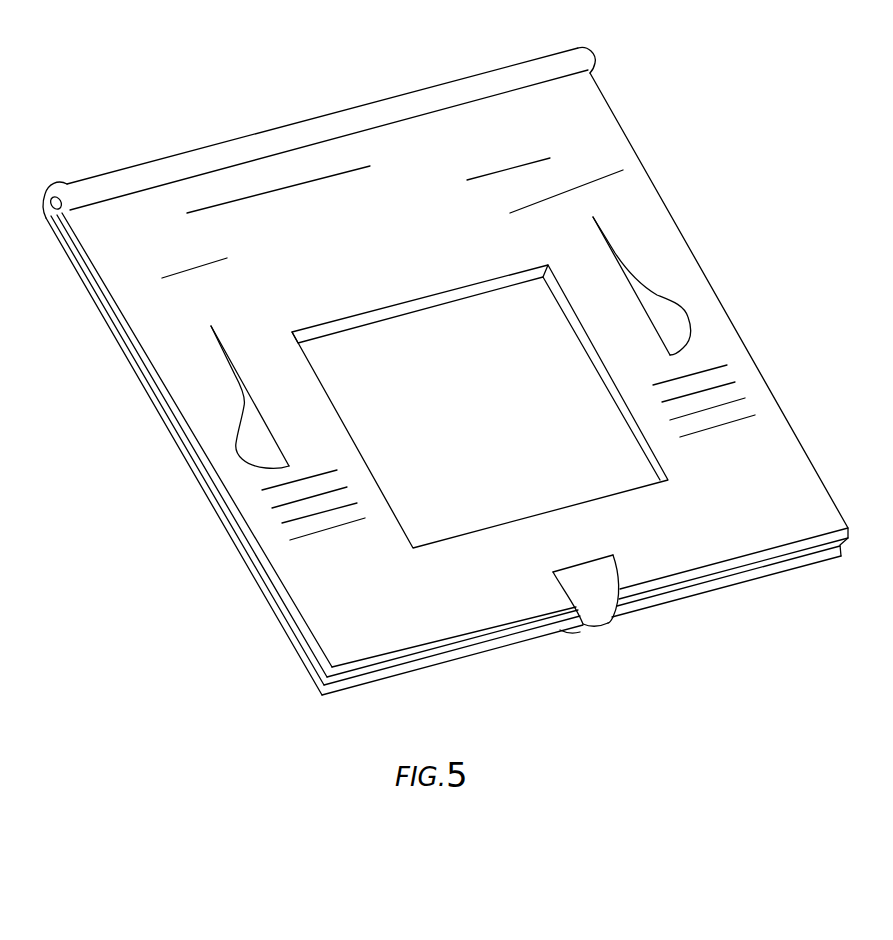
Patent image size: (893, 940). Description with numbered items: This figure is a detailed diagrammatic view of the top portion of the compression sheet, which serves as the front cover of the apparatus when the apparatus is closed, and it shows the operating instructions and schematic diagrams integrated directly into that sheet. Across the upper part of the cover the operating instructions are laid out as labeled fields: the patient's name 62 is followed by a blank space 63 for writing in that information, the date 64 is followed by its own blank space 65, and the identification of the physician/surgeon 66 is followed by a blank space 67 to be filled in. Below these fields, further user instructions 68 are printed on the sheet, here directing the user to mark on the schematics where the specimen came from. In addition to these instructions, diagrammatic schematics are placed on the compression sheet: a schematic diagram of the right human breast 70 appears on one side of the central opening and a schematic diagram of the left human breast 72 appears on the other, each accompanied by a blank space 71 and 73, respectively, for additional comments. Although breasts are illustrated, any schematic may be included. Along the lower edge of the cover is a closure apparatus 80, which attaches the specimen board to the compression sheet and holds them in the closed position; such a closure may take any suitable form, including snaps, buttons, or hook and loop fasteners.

The patient's name 62 is at (127, 203).
The blank space 63 is at (307, 174).
The date 64 is at (118, 282).
The blank space 65 is at (196, 259).
The identification of physician/surgeon 66 is at (441, 156).
The blank space 67 is at (512, 155).
The user instructions 68 is at (623, 170).
The schematic diagram of the right human breast 70 is at (243, 412).
The blank space 71 is at (292, 500).
The schematic diagram of the left human breast 72 is at (660, 297).
The blank space 73 is at (728, 375).
The closure apparatus 80 is at (597, 612).